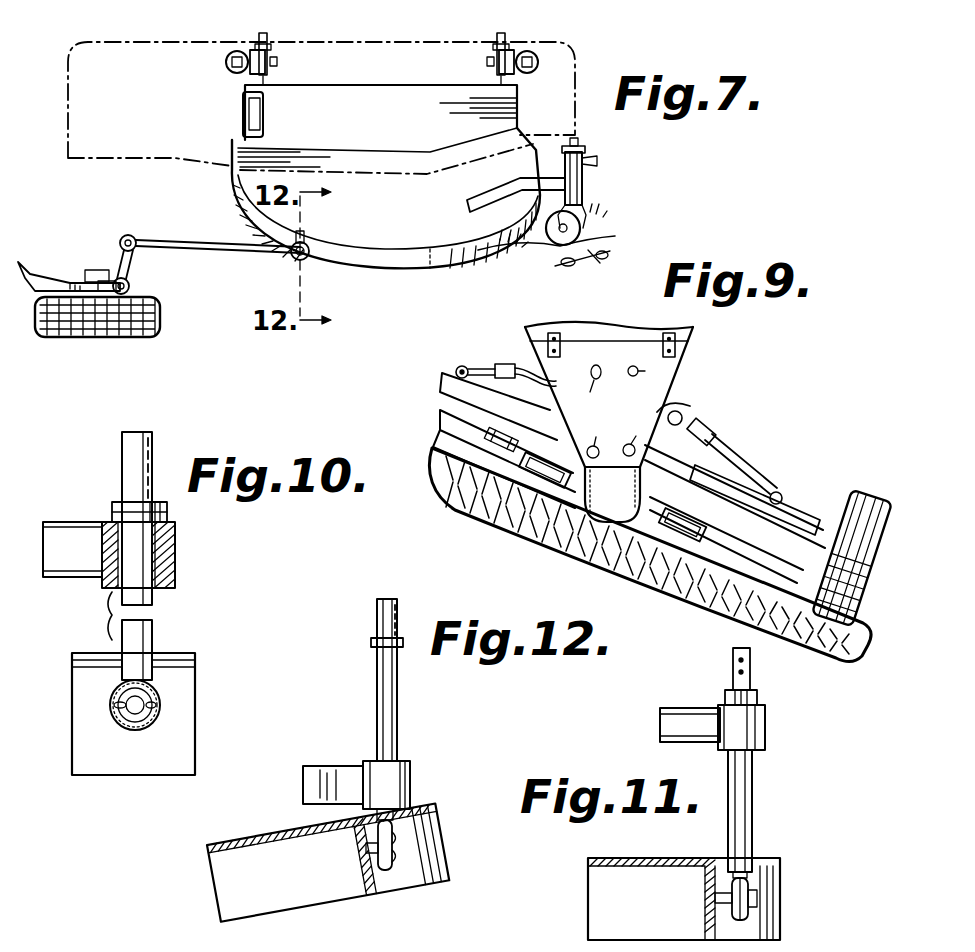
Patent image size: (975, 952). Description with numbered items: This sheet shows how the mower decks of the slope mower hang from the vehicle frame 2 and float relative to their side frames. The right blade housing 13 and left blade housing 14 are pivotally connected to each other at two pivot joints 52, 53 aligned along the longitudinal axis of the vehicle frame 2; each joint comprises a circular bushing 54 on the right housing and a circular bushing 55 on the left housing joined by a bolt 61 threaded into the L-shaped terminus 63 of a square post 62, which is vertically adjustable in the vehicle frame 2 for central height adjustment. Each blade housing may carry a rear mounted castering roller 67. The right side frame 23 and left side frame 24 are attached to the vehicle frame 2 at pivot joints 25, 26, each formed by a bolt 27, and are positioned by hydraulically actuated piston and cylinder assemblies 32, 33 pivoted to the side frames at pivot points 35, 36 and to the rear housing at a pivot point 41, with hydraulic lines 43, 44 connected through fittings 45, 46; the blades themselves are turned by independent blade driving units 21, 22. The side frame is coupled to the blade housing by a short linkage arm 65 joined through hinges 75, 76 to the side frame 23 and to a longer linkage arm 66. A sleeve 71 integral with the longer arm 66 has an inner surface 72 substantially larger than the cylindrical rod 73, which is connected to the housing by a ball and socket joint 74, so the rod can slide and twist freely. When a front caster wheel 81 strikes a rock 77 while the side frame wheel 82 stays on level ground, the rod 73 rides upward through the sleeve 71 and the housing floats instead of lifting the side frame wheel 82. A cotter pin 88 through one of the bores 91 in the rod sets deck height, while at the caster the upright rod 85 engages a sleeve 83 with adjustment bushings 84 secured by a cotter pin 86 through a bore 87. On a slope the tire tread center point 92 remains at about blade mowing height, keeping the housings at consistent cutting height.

In FIG. 7, the vehicle frame 2 is at (158, 160).
In FIG. 9, the vehicle frame 2 is at (695, 332).
In FIG. 7, the right blade housing 13 is at (386, 176).
In FIG. 9, the right blade housing 13 is at (650, 555).
In FIG. 10, the right blade housing 13 is at (190, 677).
In FIG. 12, the right blade housing 13 is at (262, 841).
In FIG. 11, the right blade housing 13 is at (780, 868).
In FIG. 9, the left blade housing 14 is at (437, 417).
In FIG. 9, the blade driving unit 21 is at (768, 545).
In FIG. 9, the blade driving unit 22 is at (518, 428).
In FIG. 7, the right side frame 23 is at (60, 284).
In FIG. 9, the right side frame 23 is at (705, 470).
In FIG. 9, the left side frame 24 is at (440, 381).
In FIG. 9, the pivot joint 25 is at (637, 435).
In FIG. 9, the pivot joint 26 is at (599, 436).
In FIG. 9, the bolt 27 is at (588, 385).
In FIG. 9, the hydraulically actuated piston and cylinder assembly 32 is at (705, 432).
In FIG. 9, the hydraulically actuated piston and cylinder assembly 33 is at (503, 364).
In FIG. 9, the pivot point 35 is at (778, 490).
In FIG. 9, the pivot point 36 is at (456, 368).
In FIG. 9, the pivot point 41 is at (650, 370).
In FIG. 9, the hydraulic line 43 is at (681, 410).
In FIG. 9, the hydraulic line 44 is at (546, 371).
In FIG. 9, the fitting 45 is at (716, 442).
In FIG. 9, the fitting 46 is at (490, 364).
In FIG. 7, the pivot joint 52 is at (510, 49).
In FIG. 7, the pivot joint 53 is at (193, 50).
In FIG. 7, the circular bushing 54 is at (252, 46).
In FIG. 7, the circular bushing 55 is at (268, 46).
In FIG. 7, the bolt 61 is at (279, 62).
In FIG. 7, the square post 62 is at (250, 72).
In FIG. 7, the L-shaped terminus 63 is at (227, 66).
In FIG. 7, the short linkage arm 65 is at (132, 262).
In FIG. 7, the longer linkage arm 66 is at (222, 243).
In FIG. 10, the longer linkage arm 66 is at (66, 527).
In FIG. 12, the longer linkage arm 66 is at (333, 785).
In FIG. 11, the longer linkage arm 66 is at (697, 708).
In FIG. 7, the castering roller 67 is at (243, 112).
In FIG. 9, the castering roller 67 is at (535, 480).
In FIG. 7, the sleeve 71 is at (296, 260).
In FIG. 10, the sleeve 71 is at (176, 572).
In FIG. 12, the sleeve 71 is at (410, 785).
In FIG. 11, the sleeve 71 is at (766, 730).
In FIG. 10, the inner surface 72 is at (175, 532).
In FIG. 7, the cylindrical rod 73 is at (305, 236).
In FIG. 10, the cylindrical rod 73 is at (152, 628).
In FIG. 12, the cylindrical rod 73 is at (397, 718).
In FIG. 11, the cylindrical rod 73 is at (753, 800).
In FIG. 10, the ball and socket joint 74 is at (145, 730).
In FIG. 12, the ball and socket joint 74 is at (407, 878).
In FIG. 11, the ball and socket joint 74 is at (757, 905).
In FIG. 7, the hinge 75 is at (130, 287).
In FIG. 7, the hinge 76 is at (140, 224).
In FIG. 7, the rock 77 is at (585, 263).
In FIG. 7, the front caster wheel 81 is at (582, 230).
In FIG. 7, the side frame wheel 82 is at (162, 334).
In FIG. 9, the side frame wheel 82 is at (849, 500).
In FIG. 7, the sleeve 83 is at (583, 193).
In FIG. 7, the adjustment bushing 84 is at (600, 157).
In FIG. 7, the upright rod 85 is at (577, 140).
In FIG. 7, the cotter pin 86 is at (585, 150).
In FIG. 7, the bore 87 is at (566, 150).
In FIG. 10, the cotter pin 88 is at (114, 498).
In FIG. 12, the cotter pin 88 is at (371, 643).
In FIG. 11, the cotter pin 88 is at (752, 680).
In FIG. 9, the bores 91 is at (642, 490).
In FIG. 10, the bores 91 is at (122, 456).
In FIG. 12, the bores 91 is at (377, 623).
In FIG. 11, the bores 91 is at (733, 658).
In FIG. 9, the center point 92 is at (622, 493).